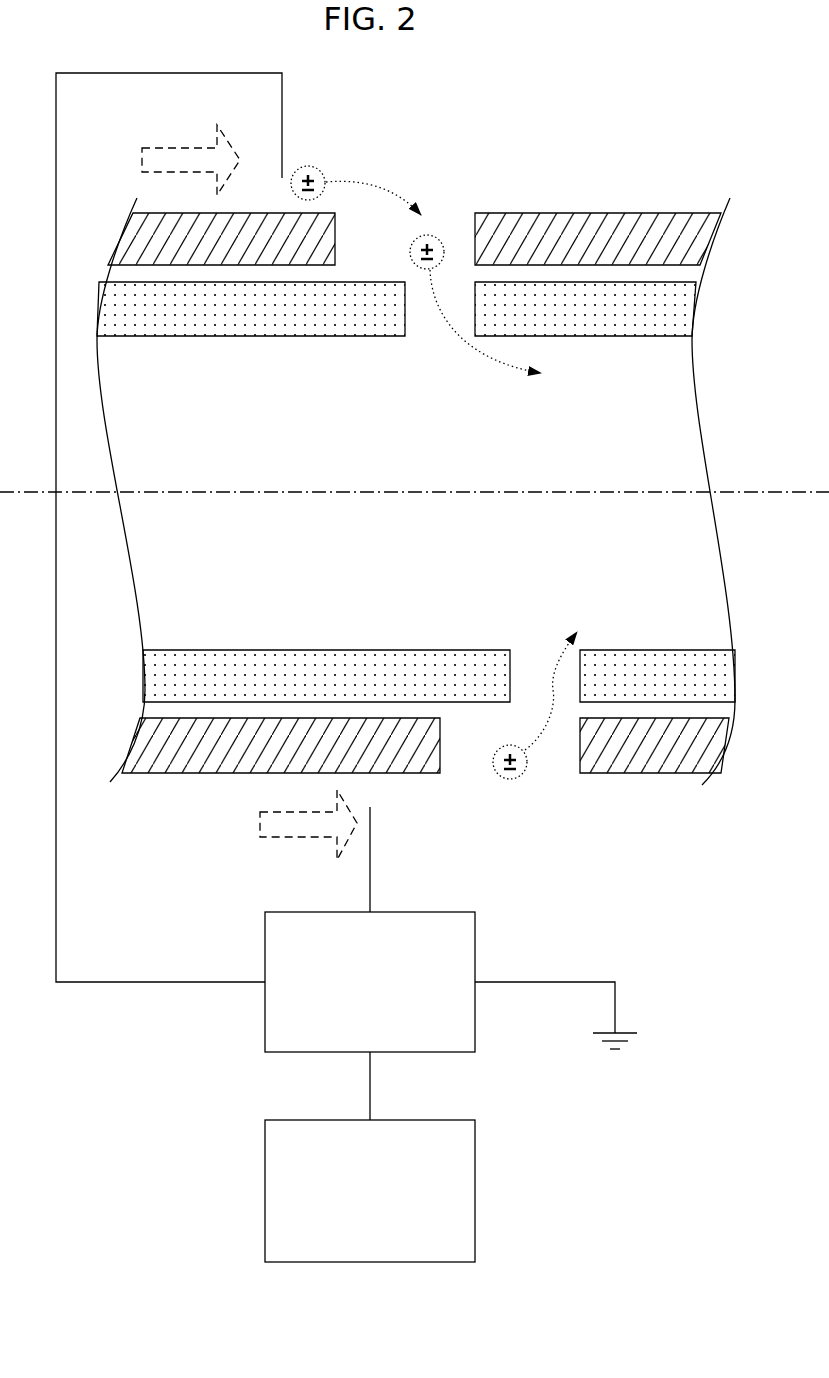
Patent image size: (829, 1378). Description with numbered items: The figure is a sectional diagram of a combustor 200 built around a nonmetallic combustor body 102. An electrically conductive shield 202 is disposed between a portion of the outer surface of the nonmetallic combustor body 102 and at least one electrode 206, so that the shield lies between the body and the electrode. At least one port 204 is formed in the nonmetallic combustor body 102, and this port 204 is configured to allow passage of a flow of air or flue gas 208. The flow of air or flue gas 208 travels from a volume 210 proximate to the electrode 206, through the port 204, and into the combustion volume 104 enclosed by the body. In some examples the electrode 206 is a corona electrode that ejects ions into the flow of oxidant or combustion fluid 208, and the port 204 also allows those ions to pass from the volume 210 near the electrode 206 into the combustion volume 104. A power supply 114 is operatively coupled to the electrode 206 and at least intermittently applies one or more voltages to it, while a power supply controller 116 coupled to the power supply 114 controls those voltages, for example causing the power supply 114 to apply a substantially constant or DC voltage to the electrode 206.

The combustor 200 is at (597, 150).
The electrically conductive shield 202 is at (485, 212).
The port 204 is at (421, 330).
The electrode 206 is at (282, 118).
The flow of air or flue gas 208 is at (217, 130).
The volume proximate to the electrode 210 is at (343, 160).
The nonmetallic combustor body 102 is at (233, 337).
The combustion volume 104 is at (469, 455).
The power supply 114 is at (351, 1023).
The power supply controller 116 is at (351, 1246).